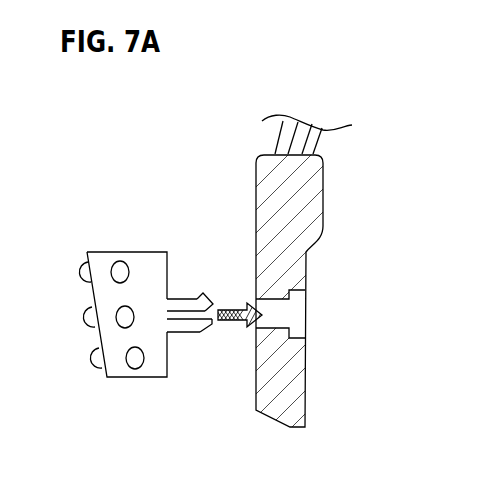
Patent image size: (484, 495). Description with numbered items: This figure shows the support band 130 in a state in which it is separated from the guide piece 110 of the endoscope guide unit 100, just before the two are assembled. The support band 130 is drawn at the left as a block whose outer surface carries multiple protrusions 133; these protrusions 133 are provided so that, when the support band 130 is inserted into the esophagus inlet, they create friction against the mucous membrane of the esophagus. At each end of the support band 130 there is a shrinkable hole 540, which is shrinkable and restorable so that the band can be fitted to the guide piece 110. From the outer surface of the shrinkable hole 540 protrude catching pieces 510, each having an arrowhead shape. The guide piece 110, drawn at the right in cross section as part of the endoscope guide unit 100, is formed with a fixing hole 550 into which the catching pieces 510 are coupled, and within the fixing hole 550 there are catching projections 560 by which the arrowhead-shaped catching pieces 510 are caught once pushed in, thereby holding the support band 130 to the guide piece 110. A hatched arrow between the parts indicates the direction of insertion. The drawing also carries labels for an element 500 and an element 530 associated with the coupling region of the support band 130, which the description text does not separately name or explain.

The endoscope guide unit 100 is at (255, 164).
The guide piece 110 is at (308, 174).
The support band 130 is at (147, 378).
The protrusions 133 is at (86, 324).
The coupling member 500 is at (204, 342).
The catching pieces 510 is at (197, 296).
The elastic arm 530 is at (180, 297).
The shrinkable holes 540 is at (167, 312).
The fixing holes 550 is at (292, 316).
The catching projections 560 is at (290, 298).